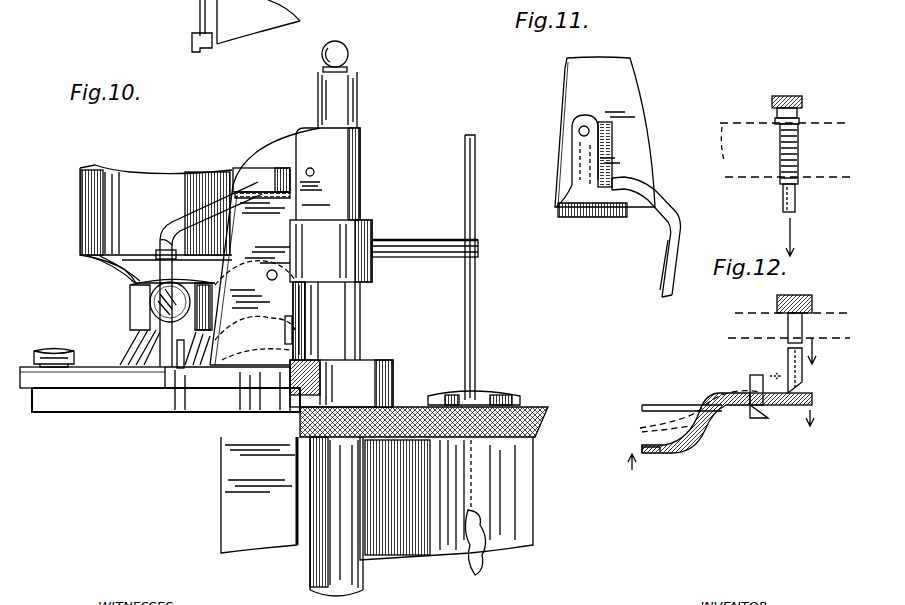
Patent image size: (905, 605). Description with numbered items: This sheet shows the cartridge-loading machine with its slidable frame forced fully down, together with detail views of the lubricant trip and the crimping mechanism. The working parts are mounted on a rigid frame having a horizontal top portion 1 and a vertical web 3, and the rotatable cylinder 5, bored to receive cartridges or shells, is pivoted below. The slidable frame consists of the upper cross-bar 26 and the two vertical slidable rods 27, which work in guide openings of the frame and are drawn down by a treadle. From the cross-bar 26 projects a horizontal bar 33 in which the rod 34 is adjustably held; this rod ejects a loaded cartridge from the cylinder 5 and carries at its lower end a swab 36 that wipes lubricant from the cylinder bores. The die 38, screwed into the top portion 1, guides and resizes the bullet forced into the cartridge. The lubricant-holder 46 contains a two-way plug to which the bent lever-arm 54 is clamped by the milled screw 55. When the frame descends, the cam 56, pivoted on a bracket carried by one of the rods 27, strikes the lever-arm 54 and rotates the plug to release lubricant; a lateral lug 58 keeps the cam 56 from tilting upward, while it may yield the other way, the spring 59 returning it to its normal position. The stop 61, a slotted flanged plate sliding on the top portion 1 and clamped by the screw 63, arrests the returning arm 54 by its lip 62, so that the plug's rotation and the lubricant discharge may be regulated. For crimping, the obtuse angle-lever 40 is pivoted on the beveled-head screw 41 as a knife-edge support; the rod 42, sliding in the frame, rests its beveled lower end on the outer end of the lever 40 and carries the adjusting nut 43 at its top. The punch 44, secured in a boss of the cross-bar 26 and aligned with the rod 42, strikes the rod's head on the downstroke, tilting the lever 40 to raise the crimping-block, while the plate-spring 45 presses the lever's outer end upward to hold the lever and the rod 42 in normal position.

In FIG. 10, the horizontal top portion 1 is at (290, 402).
In FIG. 12, the horizontal top portion 1 is at (752, 319).
In FIG. 10, the vertical web 3 is at (259, 495).
In FIG. 10, the cylinder 5 is at (446, 498).
In FIG. 10, the cross-bar 26 is at (367, 221).
In FIG. 12, the cross-bar 26 is at (824, 123).
In FIG. 10, the vertical slidable rods 27 is at (357, 99).
In FIG. 10, the horizontal bar 33 is at (413, 284).
In FIG. 10, the rod 34 is at (465, 170).
In FIG. 10, the swab 36 is at (490, 556).
In FIG. 10, the die 38 is at (393, 357).
In FIG. 12, the angle-lever 40 is at (737, 428).
In FIG. 12, the screw 41 is at (757, 420).
In FIG. 12, the rod 42 is at (766, 363).
In FIG. 10, the nut 43 is at (292, 364).
In FIG. 12, the nut 43 is at (812, 300).
In FIG. 12, the punch 44 is at (787, 189).
In FIG. 12, the plate-spring 45 is at (680, 402).
In FIG. 10, the lubricant-holder 46 is at (156, 224).
In FIG. 10, the bent lever-arm 54 is at (192, 220).
In FIG. 11, the bent lever-arm 54 is at (678, 211).
In FIG. 10, the screw 55 is at (130, 300).
In FIG. 10, the cam 56 is at (265, 303).
In FIG. 11, the cam 56 is at (584, 161).
In FIG. 10, the lateral lug 58 is at (200, 7).
In FIG. 10, the spring 59 is at (290, 224).
In FIG. 11, the spring 59 is at (588, 137).
In FIG. 10, the stop 61 is at (77, 380).
In FIG. 10, the lip 62 is at (195, 368).
In FIG. 10, the screw 63 is at (45, 350).